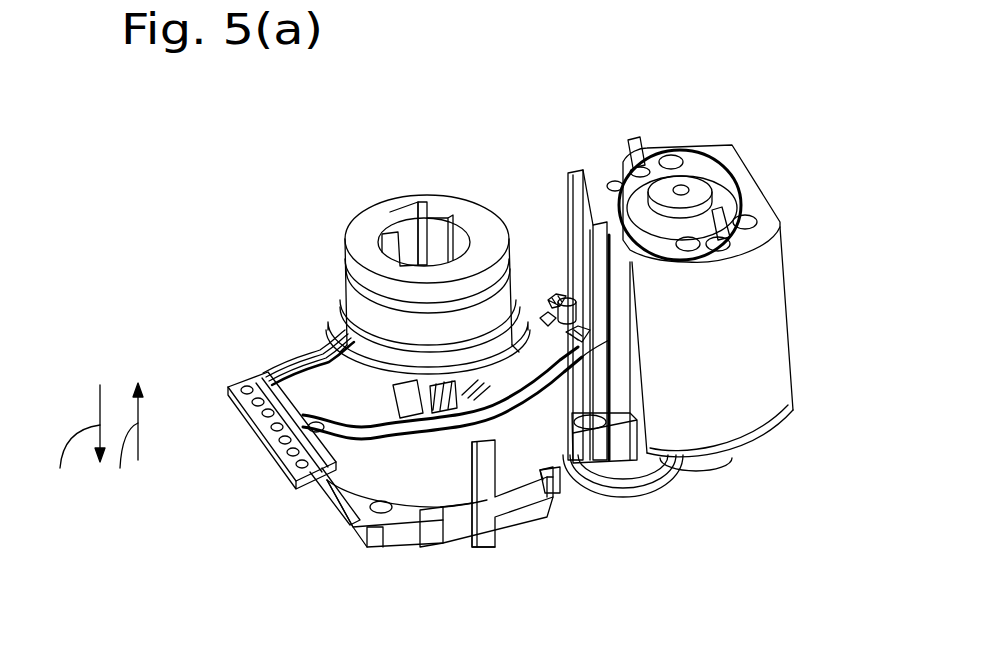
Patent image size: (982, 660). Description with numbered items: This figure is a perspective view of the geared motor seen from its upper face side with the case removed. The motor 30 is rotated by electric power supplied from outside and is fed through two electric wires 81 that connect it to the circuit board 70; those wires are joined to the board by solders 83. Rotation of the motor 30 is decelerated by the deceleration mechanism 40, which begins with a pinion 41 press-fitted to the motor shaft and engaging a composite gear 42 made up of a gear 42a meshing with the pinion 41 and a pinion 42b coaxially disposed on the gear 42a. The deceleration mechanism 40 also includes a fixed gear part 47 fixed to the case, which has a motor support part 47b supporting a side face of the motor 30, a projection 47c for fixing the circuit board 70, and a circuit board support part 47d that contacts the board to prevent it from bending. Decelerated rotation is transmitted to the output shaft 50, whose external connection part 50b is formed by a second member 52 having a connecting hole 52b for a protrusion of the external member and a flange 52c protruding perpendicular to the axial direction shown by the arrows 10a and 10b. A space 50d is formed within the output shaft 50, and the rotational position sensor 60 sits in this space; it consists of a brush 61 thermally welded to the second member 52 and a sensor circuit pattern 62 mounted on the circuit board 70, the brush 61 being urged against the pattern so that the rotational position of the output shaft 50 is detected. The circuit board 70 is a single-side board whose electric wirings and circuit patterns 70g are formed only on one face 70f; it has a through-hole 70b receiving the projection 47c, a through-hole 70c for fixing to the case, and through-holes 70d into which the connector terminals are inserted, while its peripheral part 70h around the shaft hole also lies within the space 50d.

The arrow 10a is at (65, 449).
The arrow 10b is at (118, 448).
The motor 30 is at (768, 282).
The deceleration mechanism 40 is at (571, 532).
The pinion 41 is at (730, 465).
The composite gear 42 is at (660, 483).
The gear 42a is at (640, 492).
The pinion 42b is at (622, 462).
The fixed gear part 47 is at (365, 507).
The motor support part 47b is at (622, 387).
The projection 47c is at (590, 308).
The circuit board support part 47d is at (433, 497).
The output shaft 50 is at (333, 212).
The external connection part 50b is at (358, 303).
The space 50d is at (500, 425).
The second member 52 is at (425, 200).
The connecting hole 52b is at (406, 217).
The flange 52c is at (521, 305).
The rotational position sensor 60 is at (338, 364).
The brush 61 is at (437, 403).
The sensor circuit pattern 62 is at (397, 388).
The circuit board 70 is at (228, 385).
The through-hole 70b is at (598, 331).
The through-hole 70c is at (313, 427).
The through-holes 70d is at (302, 464).
The face 70f is at (489, 395).
The circuit patterns 70g is at (325, 432).
The peripheral part 70h is at (478, 447).
The electric wires 81 is at (612, 176).
The solders 83 is at (540, 316).